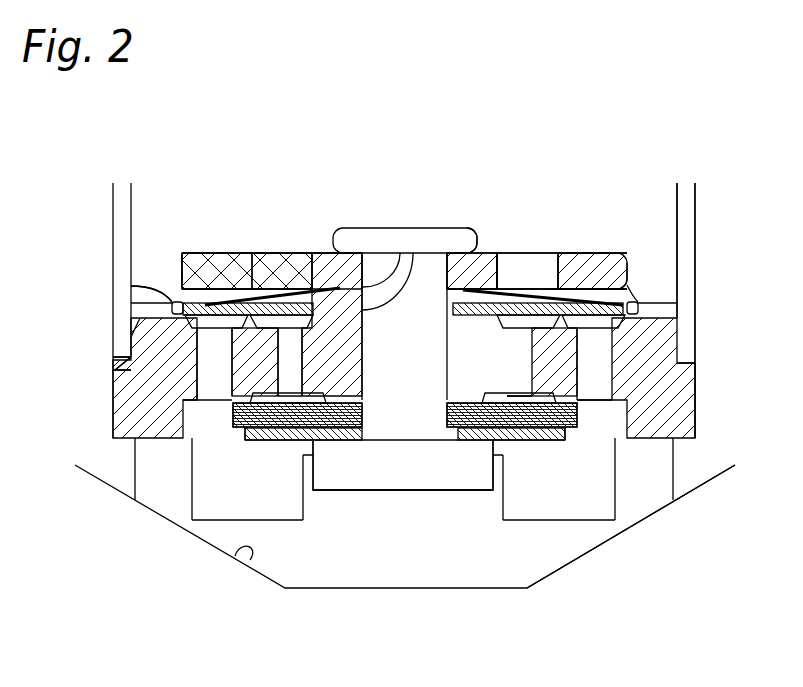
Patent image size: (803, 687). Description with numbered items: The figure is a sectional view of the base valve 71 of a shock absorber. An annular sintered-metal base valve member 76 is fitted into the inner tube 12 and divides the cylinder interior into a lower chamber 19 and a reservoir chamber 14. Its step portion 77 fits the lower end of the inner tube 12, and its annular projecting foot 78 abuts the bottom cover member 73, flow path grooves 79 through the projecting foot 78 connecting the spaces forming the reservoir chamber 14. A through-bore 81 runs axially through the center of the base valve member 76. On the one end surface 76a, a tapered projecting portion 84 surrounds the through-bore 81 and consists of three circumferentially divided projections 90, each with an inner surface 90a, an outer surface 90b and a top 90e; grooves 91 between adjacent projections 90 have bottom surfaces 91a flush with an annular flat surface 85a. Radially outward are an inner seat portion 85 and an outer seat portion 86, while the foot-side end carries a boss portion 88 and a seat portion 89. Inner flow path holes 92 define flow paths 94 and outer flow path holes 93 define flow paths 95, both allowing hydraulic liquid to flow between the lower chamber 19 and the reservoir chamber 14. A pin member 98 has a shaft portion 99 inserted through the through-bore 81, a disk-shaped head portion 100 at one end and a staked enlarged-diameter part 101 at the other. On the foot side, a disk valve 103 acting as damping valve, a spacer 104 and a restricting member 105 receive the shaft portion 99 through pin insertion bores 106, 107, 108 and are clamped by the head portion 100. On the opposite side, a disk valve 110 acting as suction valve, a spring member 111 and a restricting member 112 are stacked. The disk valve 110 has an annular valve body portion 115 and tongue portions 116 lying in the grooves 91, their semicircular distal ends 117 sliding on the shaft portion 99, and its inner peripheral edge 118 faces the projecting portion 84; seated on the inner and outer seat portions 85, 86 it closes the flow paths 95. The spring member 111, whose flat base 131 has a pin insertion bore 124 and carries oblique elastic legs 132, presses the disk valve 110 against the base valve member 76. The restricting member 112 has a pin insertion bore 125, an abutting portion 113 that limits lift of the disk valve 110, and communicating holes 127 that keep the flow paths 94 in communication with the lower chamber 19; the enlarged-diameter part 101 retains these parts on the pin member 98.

The inner tube 12 is at (695, 218).
The reservoir chamber 14 is at (517, 562).
The lower chamber 19 is at (172, 305).
The base valve 71 is at (634, 214).
The bottom cover member 73 is at (243, 556).
The base valve member 76 is at (638, 531).
The one end surface 76a is at (648, 312).
The step portion 77 is at (120, 358).
The projecting foot 78 is at (642, 502).
The flow path grooves 79 is at (160, 493).
The through-bore 81 is at (432, 330).
The projecting portion 84 is at (350, 272).
The inner seat portion 85 is at (240, 253).
The annular flat surface 85a is at (532, 264).
The outer seat portion 86 is at (131, 286).
The boss portion 88 is at (338, 442).
The seat portion 89 is at (245, 432).
The projections 90 is at (257, 257).
The inner surface 90a is at (410, 253).
The outer surface 90b is at (287, 287).
The top 90e is at (303, 280).
The grooves 91 is at (465, 285).
The bottom surface 91a is at (528, 278).
The flow path holes 92 is at (131, 340).
The flow path holes 93 is at (250, 393).
The flow path 94 is at (285, 352).
The flow path 95 is at (285, 372).
The pin member 98 is at (443, 505).
The shaft portion 99 is at (585, 380).
The head portion 100 is at (432, 478).
The staked portion 101 is at (459, 231).
The disk valve 103 is at (587, 425).
The spacer 104 is at (460, 442).
The restricting member 105 is at (522, 440).
The pin insertion bore 106 is at (375, 428).
The pin insertion bore 107 is at (363, 417).
The pin insertion bore 108 is at (330, 403).
The disk valve 110 is at (652, 303).
The spring member 111 is at (518, 290).
The restricting member 112 is at (593, 264).
The abutting portion 113 is at (638, 298).
The valve body portion 115 is at (182, 280).
The tongue portions 116 is at (612, 338).
The distal end 117 is at (453, 288).
The inner peripheral edge 118 is at (252, 255).
The pin insertion bore 124 is at (395, 230).
The pin insertion bore 125 is at (372, 228).
The communicating holes 127 is at (498, 268).
The base 131 is at (320, 287).
The elastic legs 132 is at (182, 255).